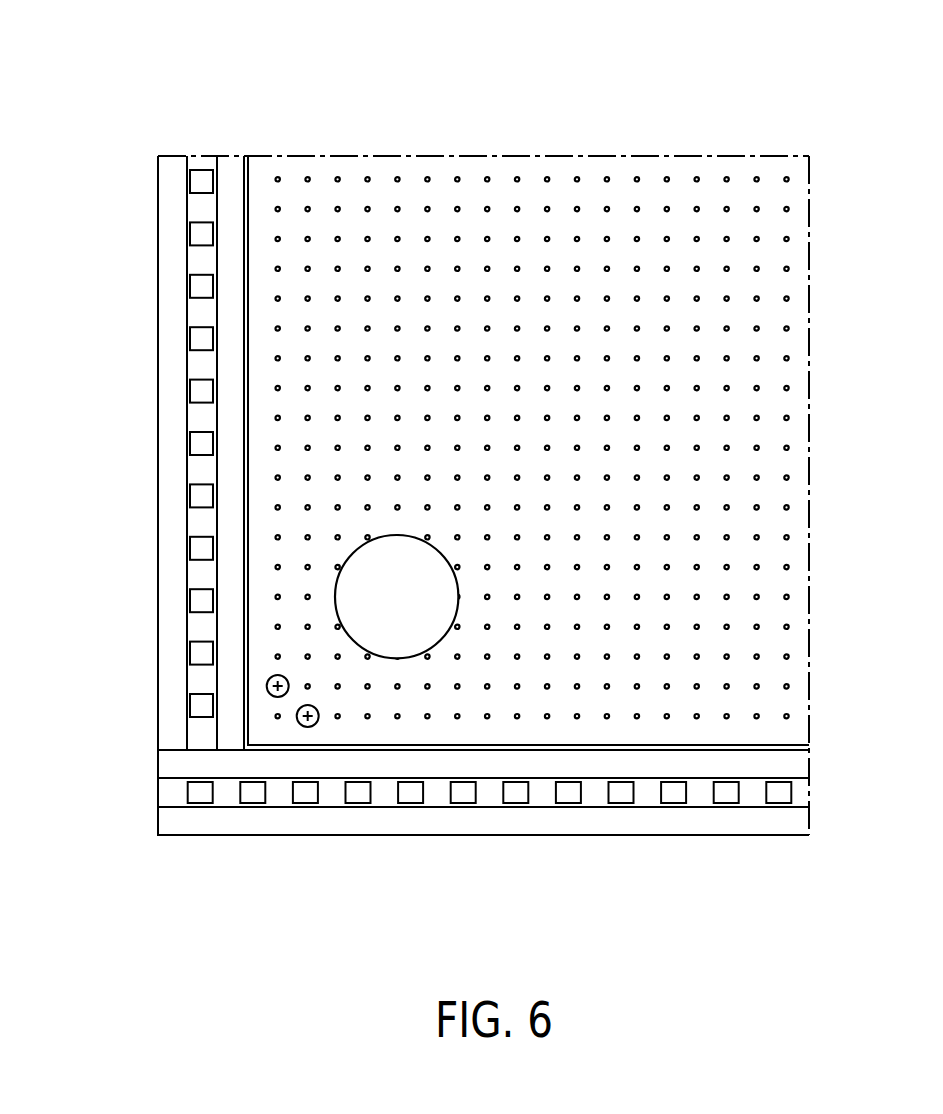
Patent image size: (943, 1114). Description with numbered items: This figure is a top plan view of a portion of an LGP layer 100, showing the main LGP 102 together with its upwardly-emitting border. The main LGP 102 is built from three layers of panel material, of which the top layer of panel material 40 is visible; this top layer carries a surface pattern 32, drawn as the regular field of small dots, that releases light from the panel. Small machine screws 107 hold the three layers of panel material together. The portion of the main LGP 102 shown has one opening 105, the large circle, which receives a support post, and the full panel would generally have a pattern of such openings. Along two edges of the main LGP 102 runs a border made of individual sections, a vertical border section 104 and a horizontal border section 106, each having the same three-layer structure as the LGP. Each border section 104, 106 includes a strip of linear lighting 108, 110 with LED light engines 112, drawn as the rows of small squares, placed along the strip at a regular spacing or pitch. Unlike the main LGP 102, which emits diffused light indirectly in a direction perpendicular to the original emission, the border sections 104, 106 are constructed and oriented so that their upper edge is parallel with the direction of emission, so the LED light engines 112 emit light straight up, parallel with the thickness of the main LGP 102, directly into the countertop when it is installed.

The LGP layer 100 is at (262, 79).
The main LGP 102 is at (532, 389).
The top layer of panel material 40 is at (617, 188).
The surface pattern 32 is at (697, 178).
The border section 104 is at (148, 423).
The strip of linear lighting 108 is at (198, 312).
The LED light engines 112 is at (195, 497).
The opening 105 is at (345, 587).
The machine screws 107 is at (297, 723).
The border section 106 is at (338, 848).
The strip of linear lighting 110 is at (487, 793).